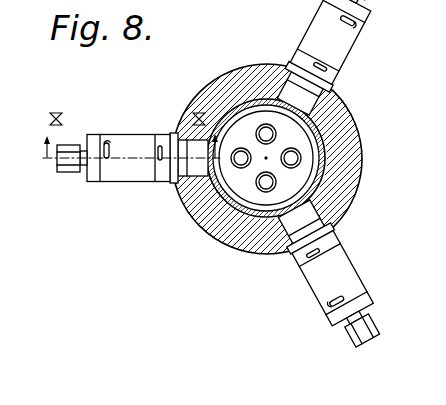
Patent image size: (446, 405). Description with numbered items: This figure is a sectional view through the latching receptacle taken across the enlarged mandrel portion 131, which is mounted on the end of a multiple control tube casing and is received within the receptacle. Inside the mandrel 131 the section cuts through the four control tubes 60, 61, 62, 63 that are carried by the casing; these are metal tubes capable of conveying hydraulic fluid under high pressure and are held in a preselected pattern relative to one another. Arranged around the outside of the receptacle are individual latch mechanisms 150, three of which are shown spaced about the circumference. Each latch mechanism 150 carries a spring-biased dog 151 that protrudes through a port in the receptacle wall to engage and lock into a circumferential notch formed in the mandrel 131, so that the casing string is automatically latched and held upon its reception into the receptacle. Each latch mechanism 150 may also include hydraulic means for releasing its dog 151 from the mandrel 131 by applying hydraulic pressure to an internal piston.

The control tube 60 is at (238, 167).
The control tube 61 is at (261, 124).
The control tube 62 is at (300, 158).
The control tube 63 is at (264, 192).
The enlarged mandrel portion 131 is at (354, 177).
The latch mechanism 150 is at (131, 132).
The dog 151 is at (183, 189).